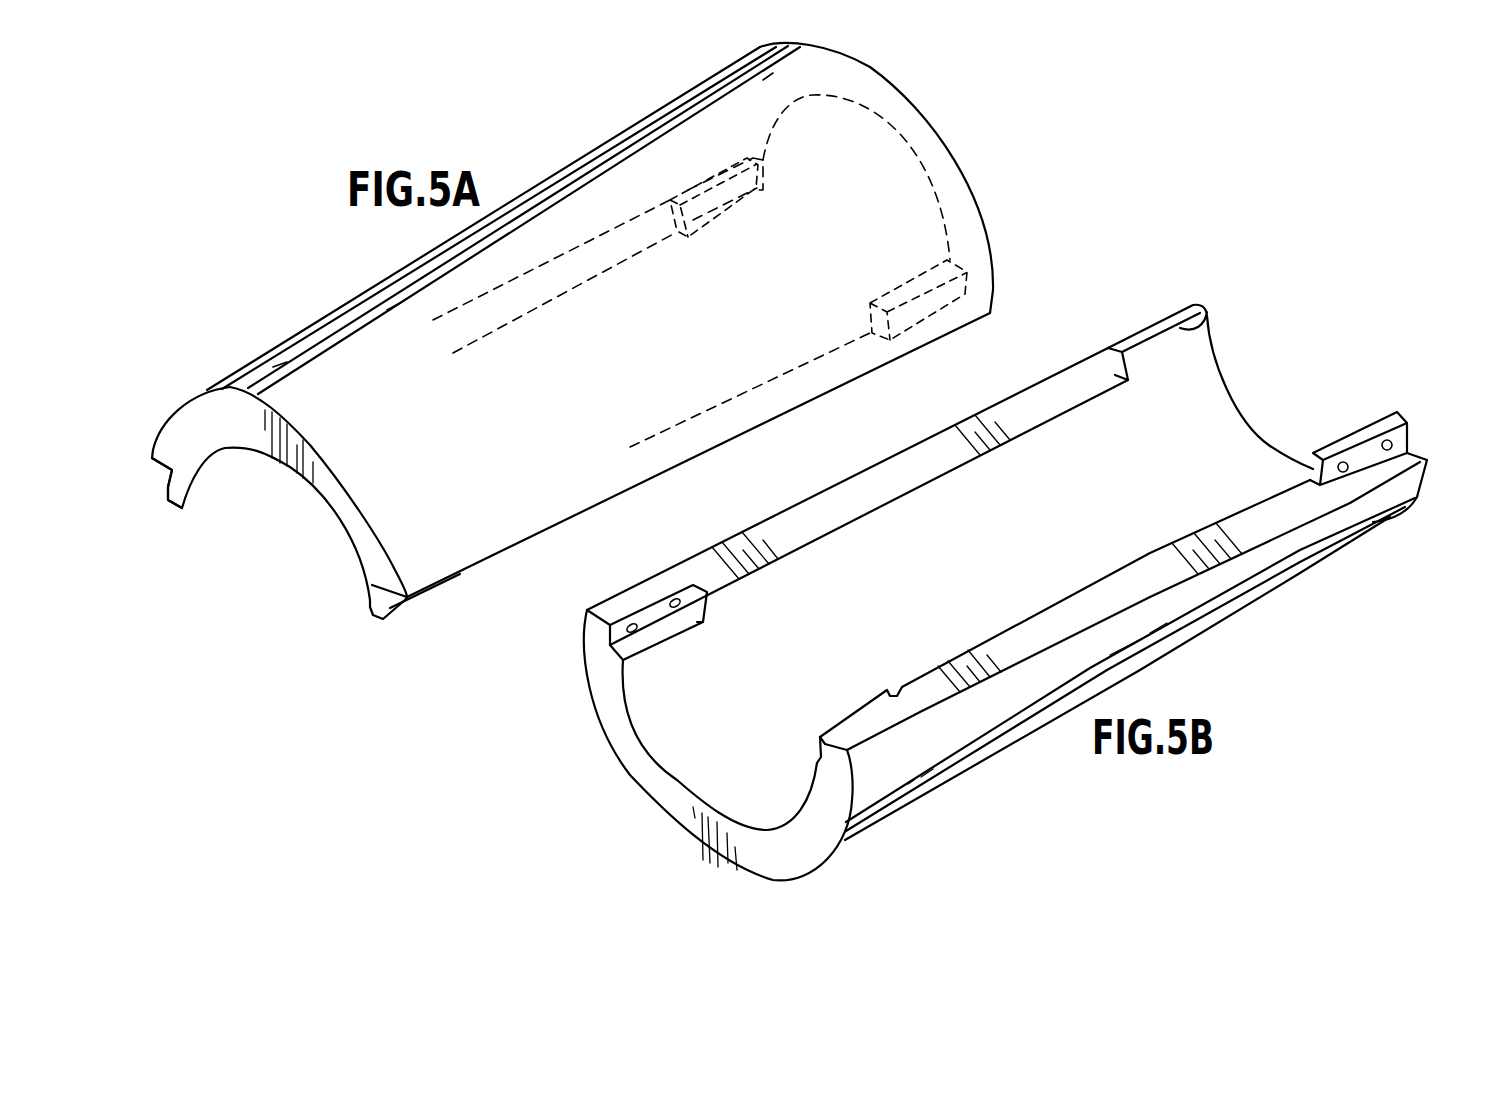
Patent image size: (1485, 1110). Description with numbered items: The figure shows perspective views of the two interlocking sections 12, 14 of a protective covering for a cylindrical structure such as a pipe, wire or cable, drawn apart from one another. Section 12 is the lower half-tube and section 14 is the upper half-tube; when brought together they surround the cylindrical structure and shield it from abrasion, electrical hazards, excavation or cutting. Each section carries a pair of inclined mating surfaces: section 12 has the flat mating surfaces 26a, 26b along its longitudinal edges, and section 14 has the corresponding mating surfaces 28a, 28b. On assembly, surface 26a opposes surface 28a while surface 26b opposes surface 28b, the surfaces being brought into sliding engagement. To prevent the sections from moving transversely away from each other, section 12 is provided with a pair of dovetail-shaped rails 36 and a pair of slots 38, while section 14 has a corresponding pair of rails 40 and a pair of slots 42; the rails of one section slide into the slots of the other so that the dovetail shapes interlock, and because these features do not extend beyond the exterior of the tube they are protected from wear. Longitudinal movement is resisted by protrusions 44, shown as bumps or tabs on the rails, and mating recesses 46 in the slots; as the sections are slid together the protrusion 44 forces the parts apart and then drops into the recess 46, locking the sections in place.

In FIG. 5B, the interlocking section 12 is at (873, 805).
In FIG. 5A, the interlocking section 14 is at (574, 218).
In FIG. 5B, the inclined mating surface 26a is at (1093, 610).
In FIG. 5B, the inclined mating surface 26b is at (866, 496).
In FIG. 5A, the inclined mating surface 28a is at (788, 408).
In FIG. 5A, the inclined mating surface 28b is at (575, 300).
In FIG. 5B, the dovetail-shaped rail 36 is at (1212, 314).
In FIG. 5B, the slot 38 is at (647, 640).
In FIG. 5A, the rail 40 is at (175, 507).
In FIG. 5A, the slot 42 is at (733, 205).
In FIG. 5B, the protrusion 44 is at (1400, 438).
In FIG. 5B, the mating recess 46 is at (641, 627).